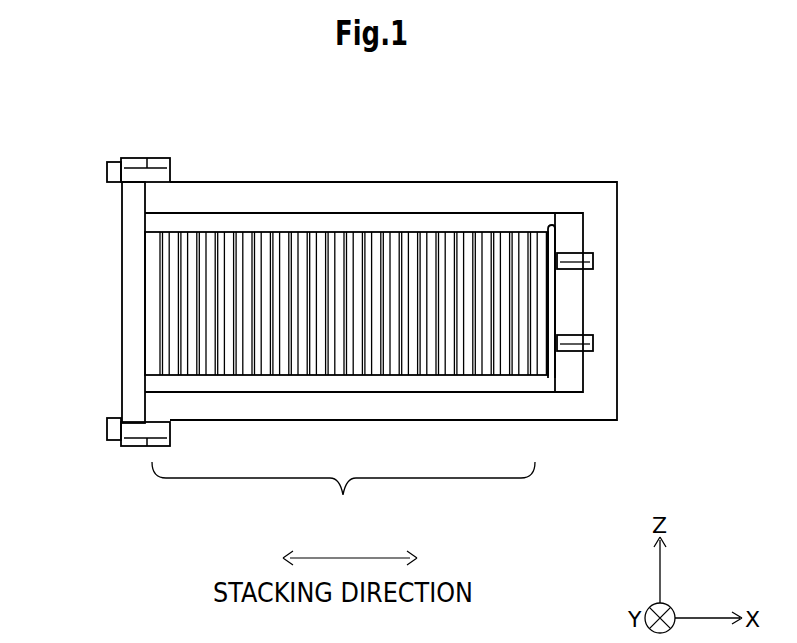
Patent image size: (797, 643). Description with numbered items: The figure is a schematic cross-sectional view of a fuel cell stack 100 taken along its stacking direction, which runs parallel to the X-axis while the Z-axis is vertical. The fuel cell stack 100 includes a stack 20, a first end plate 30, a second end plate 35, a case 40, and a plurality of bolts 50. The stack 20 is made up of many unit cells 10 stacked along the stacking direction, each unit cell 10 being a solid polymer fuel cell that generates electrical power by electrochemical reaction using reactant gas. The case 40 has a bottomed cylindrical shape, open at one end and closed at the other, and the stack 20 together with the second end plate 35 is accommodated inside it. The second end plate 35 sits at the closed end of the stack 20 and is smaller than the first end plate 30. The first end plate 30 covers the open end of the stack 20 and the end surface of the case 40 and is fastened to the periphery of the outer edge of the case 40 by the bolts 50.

The fuel cell stack 100 is at (78, 152).
The unit cell 10 is at (366, 378).
The stack 20 is at (343, 497).
The first end plate 30 is at (135, 267).
The second end plate 35 is at (552, 240).
The case 40 is at (179, 195).
The bolt 50 is at (118, 177).